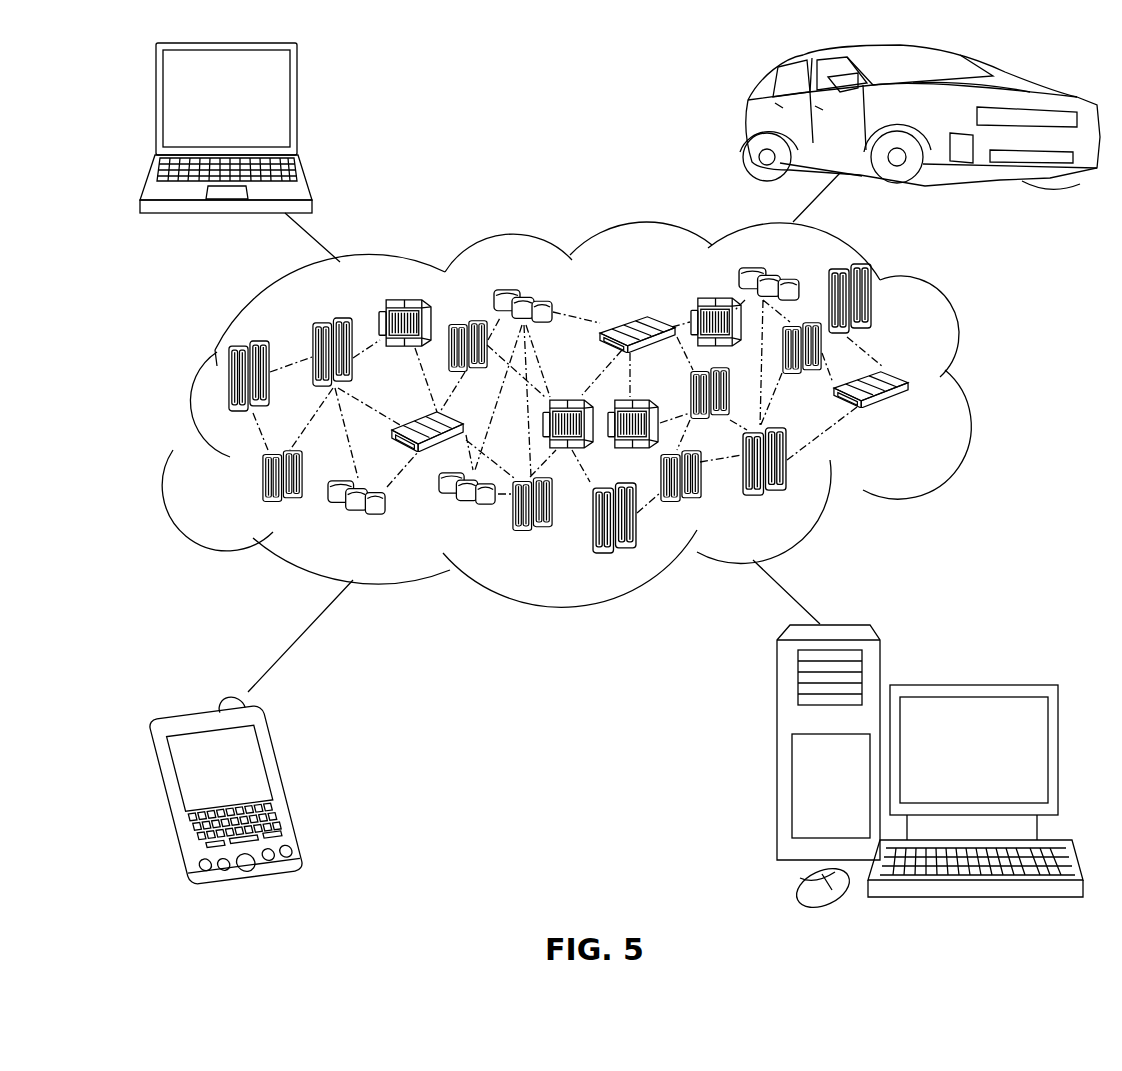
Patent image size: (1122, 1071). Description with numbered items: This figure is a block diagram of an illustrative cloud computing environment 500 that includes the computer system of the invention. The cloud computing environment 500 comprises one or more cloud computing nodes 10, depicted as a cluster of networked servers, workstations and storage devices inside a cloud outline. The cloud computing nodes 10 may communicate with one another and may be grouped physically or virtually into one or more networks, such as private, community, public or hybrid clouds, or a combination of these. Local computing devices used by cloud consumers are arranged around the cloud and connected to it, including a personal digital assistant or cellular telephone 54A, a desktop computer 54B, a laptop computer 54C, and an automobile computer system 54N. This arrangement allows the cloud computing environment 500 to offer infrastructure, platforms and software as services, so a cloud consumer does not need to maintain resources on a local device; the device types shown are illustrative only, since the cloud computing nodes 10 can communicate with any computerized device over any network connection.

The cloud computing environment 500 is at (976, 388).
The cloud computing nodes 10 is at (912, 418).
The personal digital assistant (PDA) or cellular telephone 54A is at (290, 773).
The desktop computer 54B is at (972, 686).
The laptop computer 54C is at (298, 108).
The automobile computer system 54N is at (745, 122).